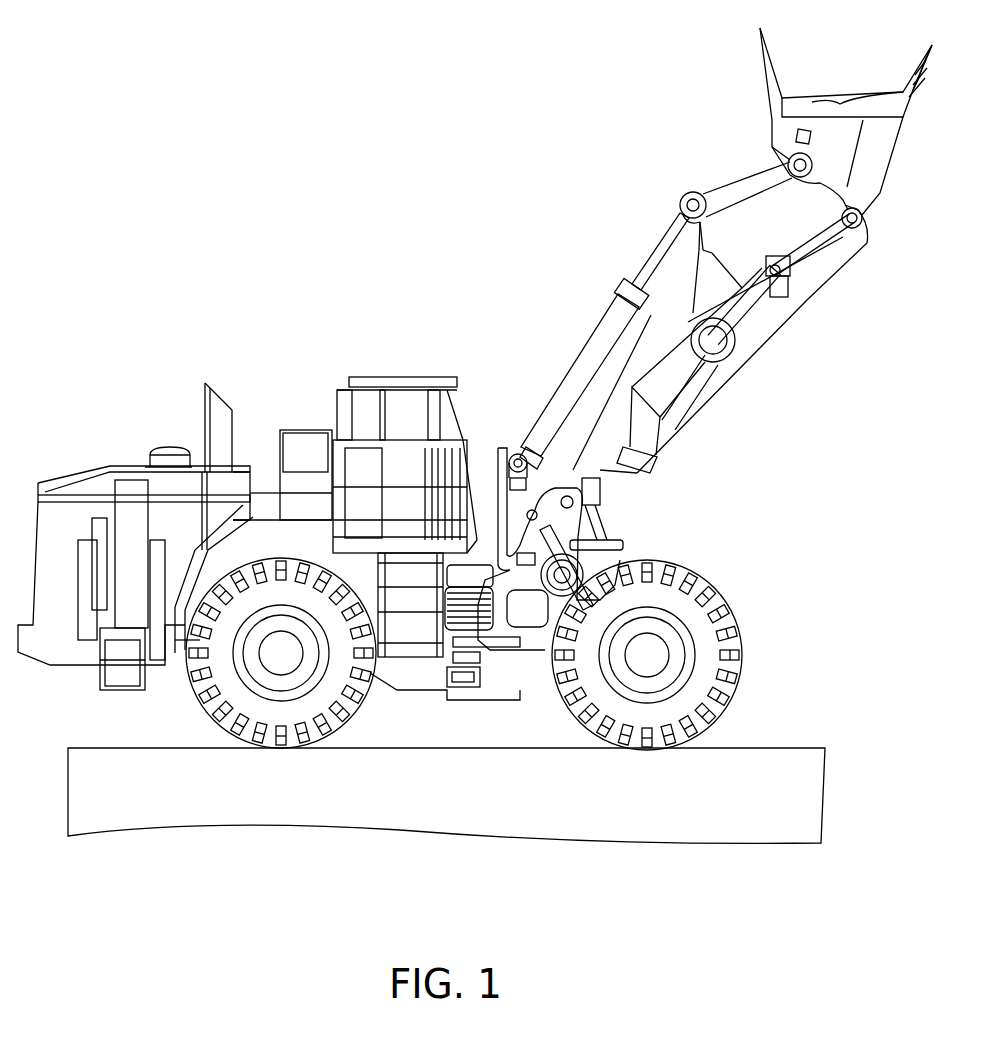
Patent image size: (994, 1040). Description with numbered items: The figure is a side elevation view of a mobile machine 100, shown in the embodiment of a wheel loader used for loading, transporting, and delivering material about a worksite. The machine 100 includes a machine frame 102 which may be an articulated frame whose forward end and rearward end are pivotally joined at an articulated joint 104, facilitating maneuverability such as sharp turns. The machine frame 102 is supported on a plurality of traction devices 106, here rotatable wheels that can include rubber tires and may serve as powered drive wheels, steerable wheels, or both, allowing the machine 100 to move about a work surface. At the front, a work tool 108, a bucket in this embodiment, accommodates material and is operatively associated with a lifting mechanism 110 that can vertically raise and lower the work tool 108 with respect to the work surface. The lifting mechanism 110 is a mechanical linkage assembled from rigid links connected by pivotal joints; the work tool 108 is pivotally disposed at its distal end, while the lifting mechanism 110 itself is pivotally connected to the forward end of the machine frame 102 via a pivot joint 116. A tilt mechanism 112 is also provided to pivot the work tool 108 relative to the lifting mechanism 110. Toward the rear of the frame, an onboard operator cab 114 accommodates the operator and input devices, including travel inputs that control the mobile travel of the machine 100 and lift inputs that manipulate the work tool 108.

The mobile machine 100 is at (598, 110).
The machine frame 102 is at (517, 663).
The articulated joint 104 is at (463, 703).
The traction devices 106 is at (367, 697).
The work tool 108 is at (845, 108).
The lifting mechanism 110 is at (738, 322).
The tilt mechanism 112 is at (643, 237).
The operator cab 114 is at (410, 377).
The pivot joint 116 is at (575, 505).